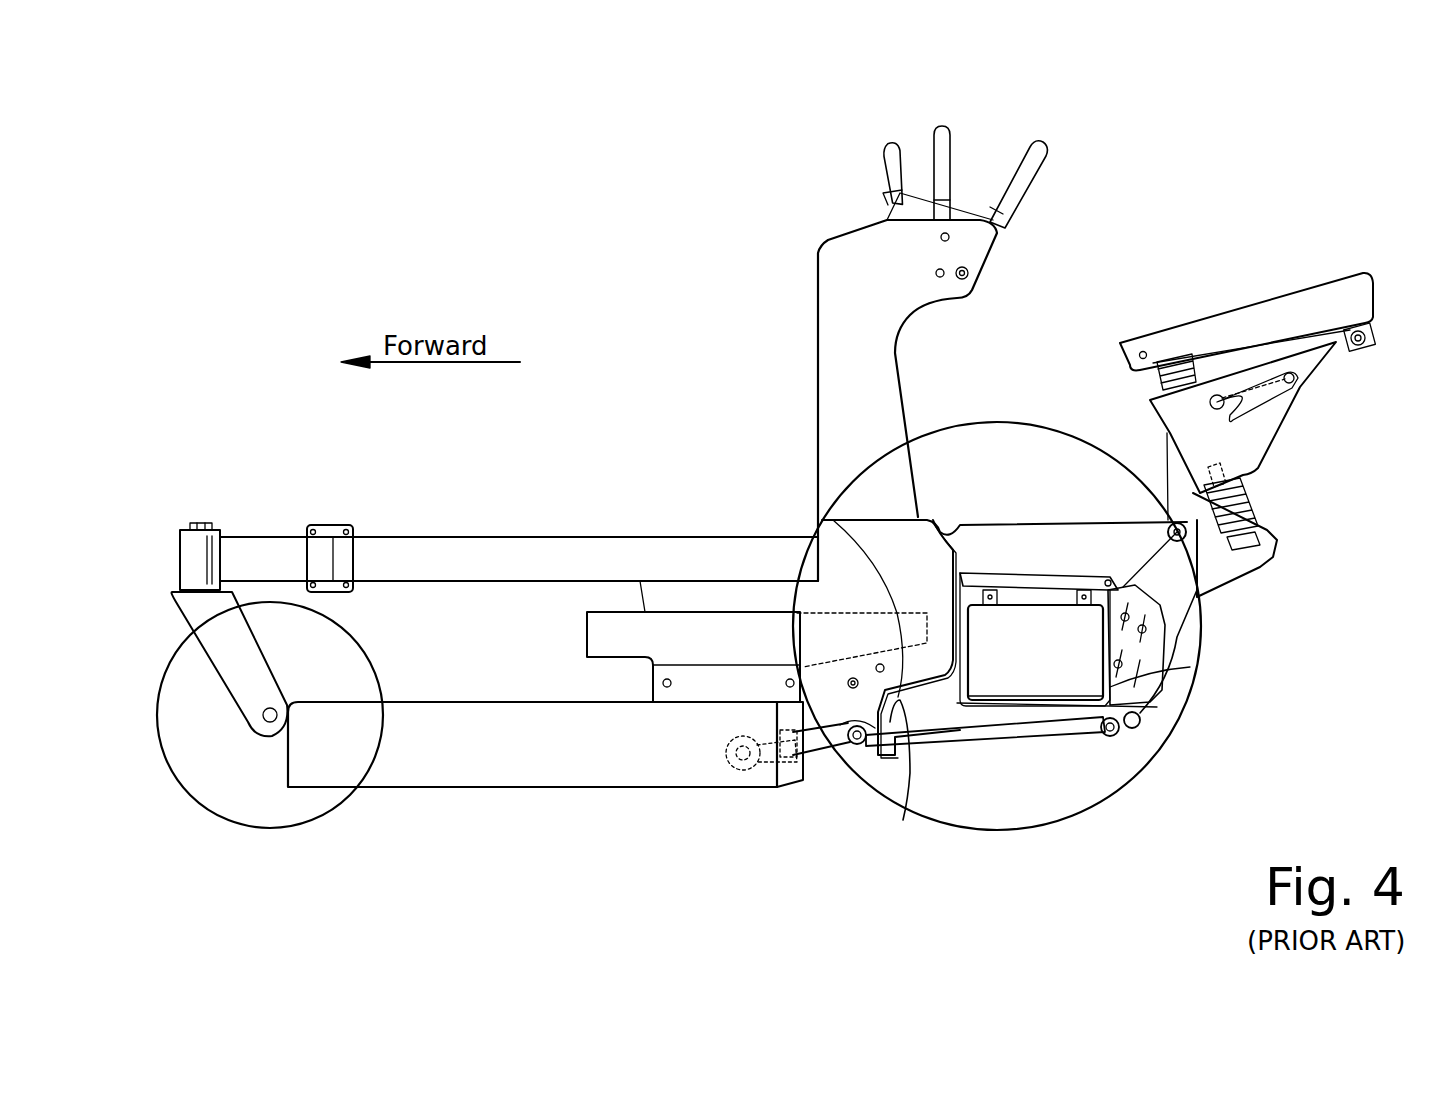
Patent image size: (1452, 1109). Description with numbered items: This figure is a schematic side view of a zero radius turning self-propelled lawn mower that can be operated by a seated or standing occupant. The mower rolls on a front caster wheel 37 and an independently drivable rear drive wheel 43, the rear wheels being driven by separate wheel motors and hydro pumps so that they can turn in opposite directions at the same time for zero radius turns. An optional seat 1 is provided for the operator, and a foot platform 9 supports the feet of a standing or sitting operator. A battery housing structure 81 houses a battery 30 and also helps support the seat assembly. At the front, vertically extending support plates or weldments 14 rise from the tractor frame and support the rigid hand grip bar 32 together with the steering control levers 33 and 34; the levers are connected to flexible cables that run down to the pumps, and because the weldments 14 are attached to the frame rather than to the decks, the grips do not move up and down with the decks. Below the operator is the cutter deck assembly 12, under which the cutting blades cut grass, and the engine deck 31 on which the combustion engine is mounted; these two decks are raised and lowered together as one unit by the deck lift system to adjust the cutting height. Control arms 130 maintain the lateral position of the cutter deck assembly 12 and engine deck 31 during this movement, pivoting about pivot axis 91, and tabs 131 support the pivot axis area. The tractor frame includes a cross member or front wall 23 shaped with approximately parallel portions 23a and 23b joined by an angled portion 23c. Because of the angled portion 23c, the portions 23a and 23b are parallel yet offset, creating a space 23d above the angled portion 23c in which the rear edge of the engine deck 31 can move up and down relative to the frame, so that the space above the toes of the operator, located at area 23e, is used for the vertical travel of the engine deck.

The seat 1 is at (1267, 313).
The foot platform 9 is at (1053, 707).
The cutter deck assembly 12 is at (667, 758).
The vertically extending support plates or weldments 14 is at (830, 323).
The cross member or front wall 23 is at (940, 620).
The parallel portion 23a is at (945, 612).
The parallel portion 23b is at (850, 720).
The angled portion 23c is at (862, 680).
The space 23d is at (938, 623).
The toe area 23e is at (903, 820).
The battery 30 is at (1028, 683).
The engine deck 31 is at (637, 612).
The rigid hand grip bar 32 is at (945, 167).
The steering control lever 33 is at (893, 172).
The steering control lever 34 is at (1027, 163).
The front caster wheel 37 is at (215, 783).
The rear drive wheel 43 is at (1168, 740).
The battery housing structure 81 is at (1190, 667).
The pivot axis 91 is at (855, 745).
The control arm 130 is at (820, 760).
The tab 131 is at (862, 755).